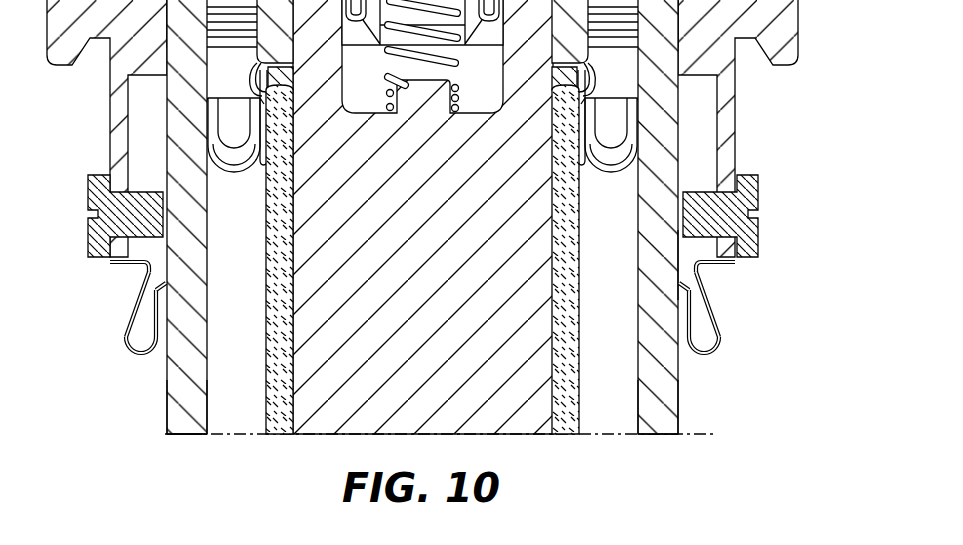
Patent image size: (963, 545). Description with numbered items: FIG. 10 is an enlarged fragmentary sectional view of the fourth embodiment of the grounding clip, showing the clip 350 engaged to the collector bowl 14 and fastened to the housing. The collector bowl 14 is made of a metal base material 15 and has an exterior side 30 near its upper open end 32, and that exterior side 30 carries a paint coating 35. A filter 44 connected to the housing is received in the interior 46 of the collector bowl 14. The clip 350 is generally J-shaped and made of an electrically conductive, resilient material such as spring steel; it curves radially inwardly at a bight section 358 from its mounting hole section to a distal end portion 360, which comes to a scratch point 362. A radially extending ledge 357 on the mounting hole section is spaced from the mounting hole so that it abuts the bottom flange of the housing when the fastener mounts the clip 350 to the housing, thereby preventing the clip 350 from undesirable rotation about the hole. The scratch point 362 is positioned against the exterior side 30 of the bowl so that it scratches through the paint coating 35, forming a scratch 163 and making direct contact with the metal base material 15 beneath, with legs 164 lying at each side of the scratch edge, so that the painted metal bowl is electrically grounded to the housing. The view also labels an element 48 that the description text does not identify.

The collector bowl 14 is at (185, 425).
The metal base material 15 is at (192, 427).
The exterior side 30 is at (167, 418).
The upper open end 32 is at (662, 65).
The paint coating 35 is at (167, 392).
The filter 44 is at (565, 427).
The interior 46 is at (238, 410).
The retaining ring 48 is at (757, 195).
The scratch 163 is at (167, 427).
The legs 164 is at (674, 271).
The clip 350 is at (716, 302).
The ledge 357 is at (130, 263).
The bight section 358 is at (132, 342).
The distal end portion 360 is at (157, 322).
The scratch point 362 is at (160, 287).